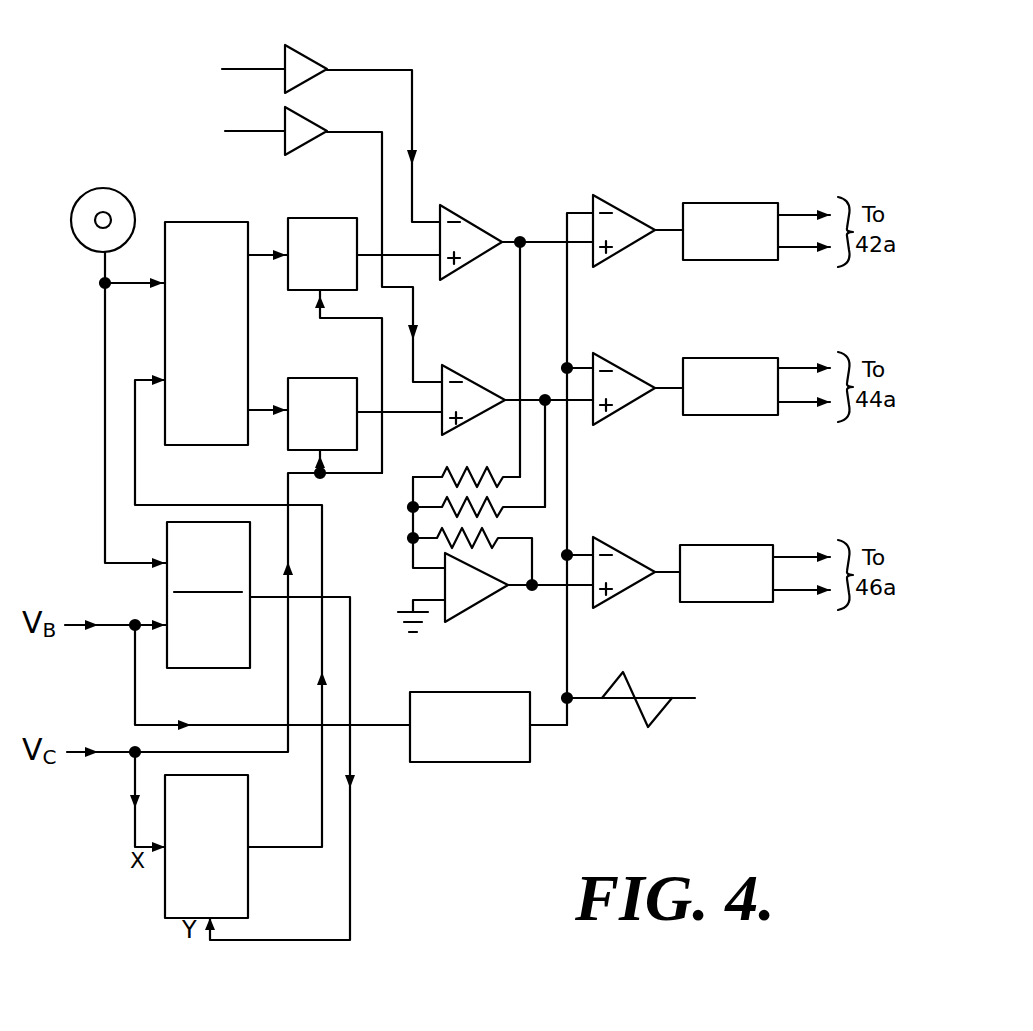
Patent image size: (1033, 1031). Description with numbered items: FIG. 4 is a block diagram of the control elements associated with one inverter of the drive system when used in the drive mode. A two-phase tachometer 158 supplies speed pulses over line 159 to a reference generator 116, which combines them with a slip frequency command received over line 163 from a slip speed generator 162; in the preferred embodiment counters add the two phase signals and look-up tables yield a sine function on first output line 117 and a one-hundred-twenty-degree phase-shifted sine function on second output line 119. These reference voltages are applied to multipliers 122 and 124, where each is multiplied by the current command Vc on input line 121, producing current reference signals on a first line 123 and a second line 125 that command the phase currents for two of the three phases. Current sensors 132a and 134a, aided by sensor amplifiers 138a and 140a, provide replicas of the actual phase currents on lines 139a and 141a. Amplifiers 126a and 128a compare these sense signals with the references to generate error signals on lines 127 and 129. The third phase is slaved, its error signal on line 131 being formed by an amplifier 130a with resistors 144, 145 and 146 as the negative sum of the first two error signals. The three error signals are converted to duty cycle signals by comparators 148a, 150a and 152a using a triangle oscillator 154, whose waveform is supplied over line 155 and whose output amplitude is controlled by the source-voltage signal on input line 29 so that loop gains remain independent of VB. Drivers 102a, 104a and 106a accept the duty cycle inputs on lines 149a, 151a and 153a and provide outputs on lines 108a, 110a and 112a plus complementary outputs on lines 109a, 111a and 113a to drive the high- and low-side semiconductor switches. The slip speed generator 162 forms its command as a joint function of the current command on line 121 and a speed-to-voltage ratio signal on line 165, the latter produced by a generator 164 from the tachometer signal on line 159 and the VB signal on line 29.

The input line 29 is at (122, 640).
The driver 102a is at (769, 194).
The driver 104a is at (730, 386).
The driver 106a is at (726, 573).
The output line 108a is at (795, 205).
The complementary output line 109a is at (795, 270).
The output line 110a is at (798, 365).
The complementary output line 111a is at (815, 428).
The output line 112a is at (795, 555).
The complementary output line 113a is at (808, 598).
The reference generator 116 is at (232, 190).
The first output line 117 is at (268, 252).
The second output line 119 is at (258, 425).
The input line 121 is at (350, 478).
The multiplier 122 is at (325, 210).
The first line 123 is at (400, 235).
The multiplier 124 is at (322, 375).
The second line 125 is at (408, 425).
The amplifier 126a is at (482, 220).
The error signal line 127 is at (545, 230).
The amplifier 128a is at (478, 360).
The error signal line 129 is at (548, 395).
The amplifier 130a is at (470, 615).
The error signal line 131 is at (552, 590).
The current sensor 132a is at (235, 82).
The current sensor 134a is at (240, 146).
The sensor amplifier 138a is at (305, 45).
The current sense line 139a is at (393, 68).
The sensor amplifier 140a is at (308, 118).
The current sense line 141a is at (420, 320).
The resistor 144 is at (447, 474).
The resistor 145 is at (495, 500).
The resistor 146 is at (488, 535).
The comparator 148a is at (618, 198).
The duty cycle line 149a is at (670, 220).
The comparator 150a is at (612, 360).
The duty cycle line 151a is at (665, 385).
The comparator 152a is at (625, 560).
The duty cycle line 153a is at (665, 570).
The triangle oscillator 154 is at (470, 727).
The oscillator output line 155 is at (548, 732).
The two-phase tachometer 158 is at (125, 190).
The tachometer line 159 is at (102, 265).
The slip speed generator 162 is at (248, 790).
The slip frequency command line 163 is at (190, 465).
The generator 164 is at (167, 522).
The speed-to-voltage ratio line 165 is at (352, 888).